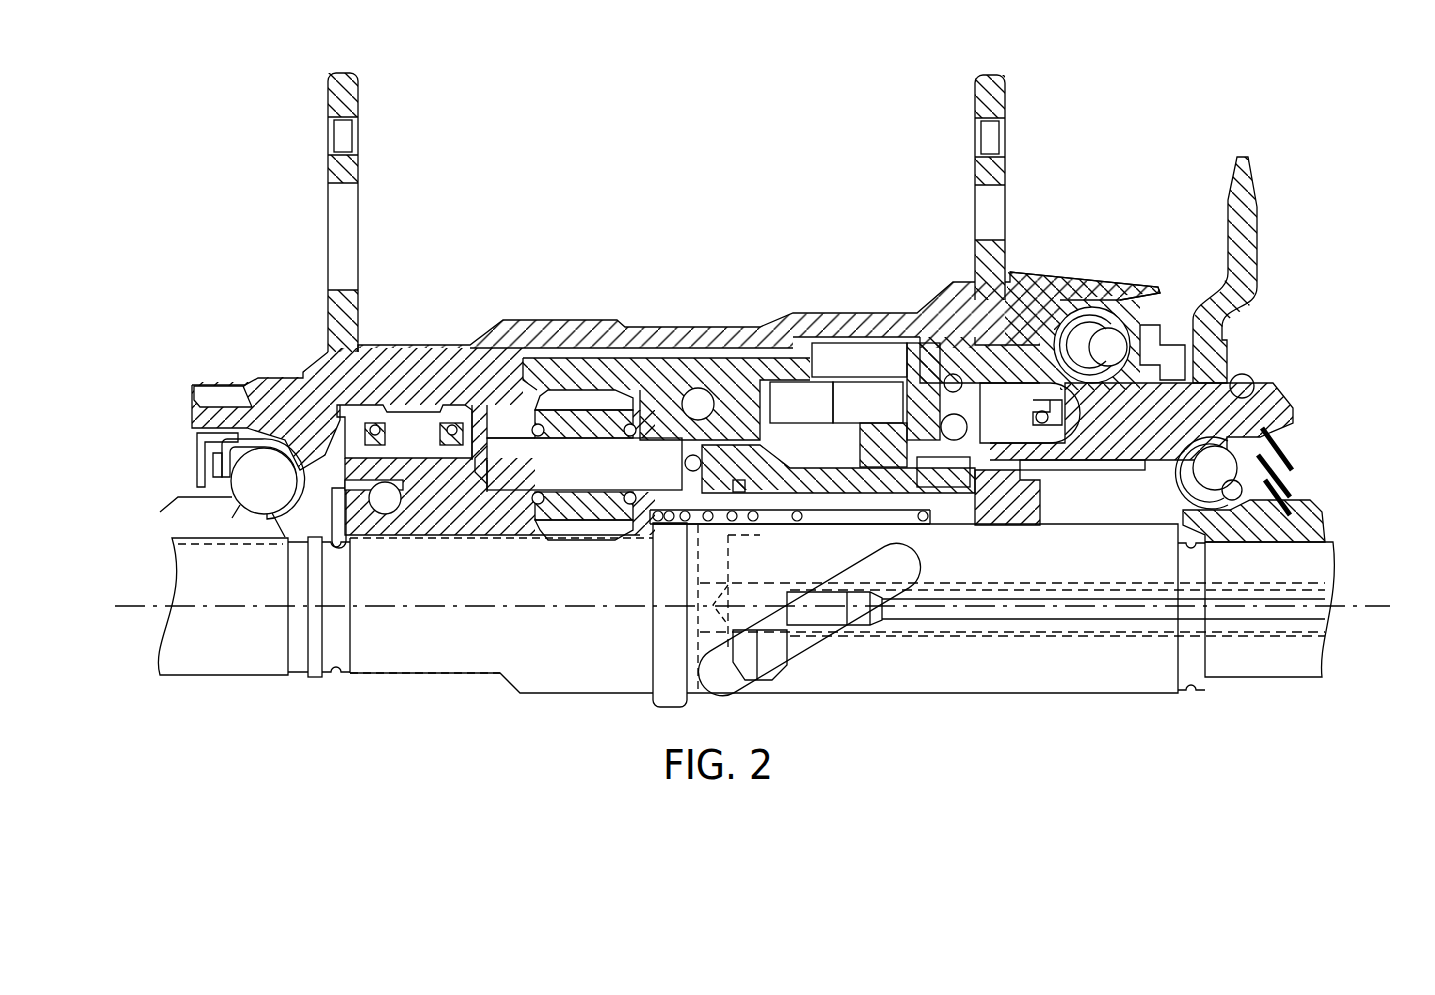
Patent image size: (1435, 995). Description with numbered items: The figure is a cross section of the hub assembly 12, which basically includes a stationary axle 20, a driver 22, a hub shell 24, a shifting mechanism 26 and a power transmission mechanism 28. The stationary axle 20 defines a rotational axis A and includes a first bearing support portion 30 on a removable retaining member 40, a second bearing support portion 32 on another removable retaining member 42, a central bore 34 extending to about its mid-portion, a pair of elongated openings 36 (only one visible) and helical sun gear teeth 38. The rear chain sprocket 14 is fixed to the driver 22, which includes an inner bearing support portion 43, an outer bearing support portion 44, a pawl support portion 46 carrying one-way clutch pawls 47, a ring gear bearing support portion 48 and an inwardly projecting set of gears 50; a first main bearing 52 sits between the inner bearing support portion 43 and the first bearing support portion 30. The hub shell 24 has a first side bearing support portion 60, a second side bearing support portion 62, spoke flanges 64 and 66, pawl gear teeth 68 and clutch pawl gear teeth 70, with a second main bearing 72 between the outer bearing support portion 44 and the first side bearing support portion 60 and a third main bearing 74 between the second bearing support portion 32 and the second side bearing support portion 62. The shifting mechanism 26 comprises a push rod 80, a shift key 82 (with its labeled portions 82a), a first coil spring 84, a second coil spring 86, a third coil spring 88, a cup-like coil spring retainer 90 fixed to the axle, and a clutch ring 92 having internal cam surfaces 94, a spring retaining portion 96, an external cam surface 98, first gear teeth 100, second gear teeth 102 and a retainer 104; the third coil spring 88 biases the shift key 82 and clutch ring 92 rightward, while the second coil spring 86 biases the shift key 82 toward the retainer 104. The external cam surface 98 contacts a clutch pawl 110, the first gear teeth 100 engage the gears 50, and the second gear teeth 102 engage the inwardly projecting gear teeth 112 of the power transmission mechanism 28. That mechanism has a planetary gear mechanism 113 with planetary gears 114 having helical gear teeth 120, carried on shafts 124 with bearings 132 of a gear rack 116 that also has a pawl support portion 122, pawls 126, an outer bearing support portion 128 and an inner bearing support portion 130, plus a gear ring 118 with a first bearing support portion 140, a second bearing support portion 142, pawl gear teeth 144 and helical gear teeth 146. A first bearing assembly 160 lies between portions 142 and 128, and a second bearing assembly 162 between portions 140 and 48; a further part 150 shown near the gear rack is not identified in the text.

The hub assembly 12 is at (798, 90).
The rear chain sprocket 14 is at (1245, 235).
The stationary axle 20 is at (1060, 677).
The driver 22 is at (1160, 340).
The hub shell 24 is at (810, 325).
The shifting mechanism 26 is at (845, 385).
The power transmission mechanism 28 is at (605, 633).
The first bearing support portion 30 is at (1242, 490).
The second bearing support portion 32 is at (235, 470).
The central bore 34 is at (1110, 628).
The elongated openings 36 is at (818, 642).
The sun gear teeth 38 is at (648, 525).
The removable retaining member 40 is at (1290, 520).
The removable retaining member 42 is at (190, 515).
The inner bearing support portion 43 is at (1250, 390).
The outer bearing support portion 44 is at (1082, 335).
The pawl support portion 46 is at (1070, 470).
The pawls 47 is at (960, 375).
The ring gear bearing support portion 48 is at (950, 450).
The inwardly projecting set of gears 50 is at (1040, 482).
The first main bearing 52 is at (1225, 470).
The first side bearing support portion 60 is at (1045, 300).
The second side bearing support portion 62 is at (302, 415).
The spoke flange 64 is at (345, 172).
The spoke flange 66 is at (998, 92).
The pawl gear teeth 68 is at (438, 380).
The clutch pawl gear teeth 70 is at (800, 345).
The second main bearing 72 is at (1105, 345).
The third main bearing 74 is at (263, 475).
The push rod 80 is at (1305, 612).
The shift key 82 is at (800, 568).
The pin end 82a is at (810, 530).
The first coil spring 84 is at (975, 625).
The second coil spring 86 is at (925, 525).
The third coil spring 88 is at (718, 526).
The coil spring retainer 90 is at (680, 527).
The clutch ring 92 is at (868, 462).
The internal cam surfaces 94 is at (805, 512).
The spring retaining portion 96 is at (893, 522).
The external cam surface 98 is at (792, 440).
The first gear teeth 100 is at (1000, 500).
The second gear teeth 102 is at (688, 458).
The retainer 104 is at (772, 455).
The clutch pawl 110 is at (885, 365).
The inwardly projecting set of gear teeth 112 is at (750, 410).
The planetary gear mechanism 113 is at (512, 358).
The planetary gears 114 is at (608, 410).
The gear rack 116 is at (466, 518).
The gear ring 118 is at (650, 405).
The helical gear teeth 120 is at (568, 395).
The pawl support portion 122 is at (319, 582).
The shafts 124 is at (525, 505).
The pawls 126 is at (405, 430).
The outer bearing support portion 128 is at (655, 437).
The inner bearing support portion 130 is at (448, 515).
The bearings 132 is at (592, 525).
The first bearing support portion 140 is at (905, 410).
The second bearing support portion 142 is at (708, 408).
The pawl gear teeth 144 is at (1105, 418).
The helical gear teeth 146 is at (507, 378).
The ball 150 is at (385, 505).
The first bearing assembly 160 is at (692, 388).
The second bearing assembly 162 is at (963, 428).
The rotational axis A is at (1368, 606).